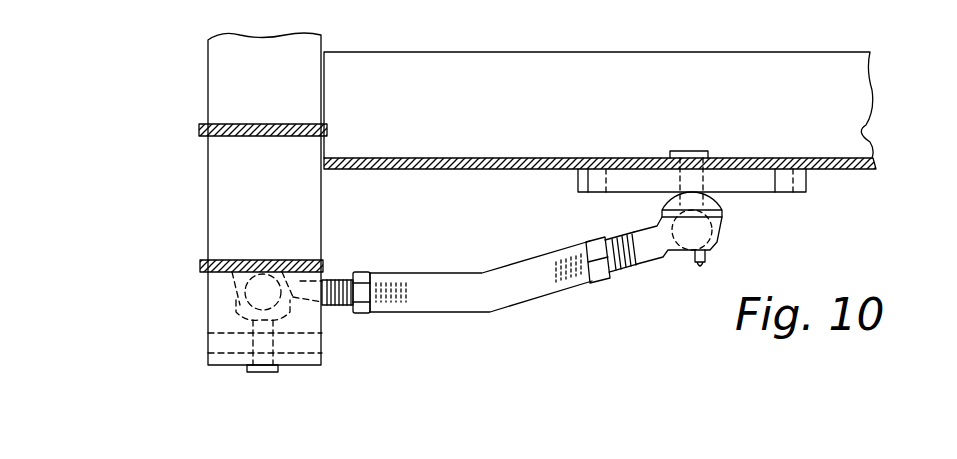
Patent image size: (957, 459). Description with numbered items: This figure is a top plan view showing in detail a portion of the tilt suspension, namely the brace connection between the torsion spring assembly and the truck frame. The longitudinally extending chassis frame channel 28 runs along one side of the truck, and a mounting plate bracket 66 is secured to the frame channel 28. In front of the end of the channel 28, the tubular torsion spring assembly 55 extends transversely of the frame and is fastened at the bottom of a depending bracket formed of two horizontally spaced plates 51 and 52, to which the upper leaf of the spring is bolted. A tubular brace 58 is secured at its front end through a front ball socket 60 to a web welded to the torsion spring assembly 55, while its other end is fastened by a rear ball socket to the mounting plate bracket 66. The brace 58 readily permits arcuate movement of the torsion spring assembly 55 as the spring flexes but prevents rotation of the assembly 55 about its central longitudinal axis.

The chassis frame channel 28 is at (850, 129).
The plate 51 is at (292, 124).
The plate 52 is at (297, 259).
The tubular torsion spring assembly 55 is at (216, 178).
The tubular brace 58 is at (525, 295).
The front ball socket 60 is at (228, 291).
The mounting plate bracket 66 is at (750, 188).